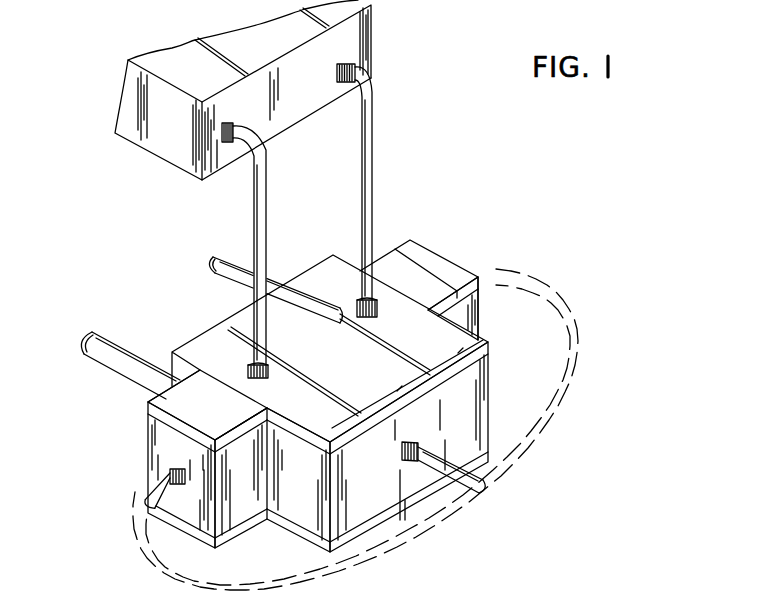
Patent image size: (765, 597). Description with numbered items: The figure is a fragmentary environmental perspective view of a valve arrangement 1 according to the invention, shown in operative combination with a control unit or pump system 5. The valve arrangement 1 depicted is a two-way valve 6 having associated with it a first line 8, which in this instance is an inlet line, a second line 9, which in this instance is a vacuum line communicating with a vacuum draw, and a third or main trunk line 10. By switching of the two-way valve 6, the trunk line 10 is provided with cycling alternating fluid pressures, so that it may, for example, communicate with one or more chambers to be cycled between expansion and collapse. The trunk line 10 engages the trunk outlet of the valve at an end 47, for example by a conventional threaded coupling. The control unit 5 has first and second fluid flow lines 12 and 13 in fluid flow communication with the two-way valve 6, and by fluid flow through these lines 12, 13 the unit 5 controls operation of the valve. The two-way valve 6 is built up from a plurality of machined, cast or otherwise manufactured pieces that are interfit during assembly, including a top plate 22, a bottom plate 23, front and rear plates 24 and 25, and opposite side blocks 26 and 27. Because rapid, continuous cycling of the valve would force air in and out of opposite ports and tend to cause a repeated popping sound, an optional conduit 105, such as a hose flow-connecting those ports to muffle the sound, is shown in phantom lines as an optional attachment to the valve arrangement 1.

The valve arrangement 1 is at (439, 181).
The control unit 5 is at (378, 37).
The two-way valve 6 is at (425, 255).
The first line 8 is at (122, 353).
The second line 9 is at (235, 255).
The trunk line 10 is at (436, 470).
The first fluid flow line 12 is at (267, 180).
The second fluid flow line 13 is at (375, 135).
The top plate 22 is at (182, 408).
The bottom plate 23 is at (232, 533).
The front plate 24 is at (212, 332).
The rear plate 25 is at (470, 376).
The side block 26 is at (160, 461).
The side block 27 is at (481, 318).
The end 47 is at (400, 452).
The conduit 105 is at (412, 550).